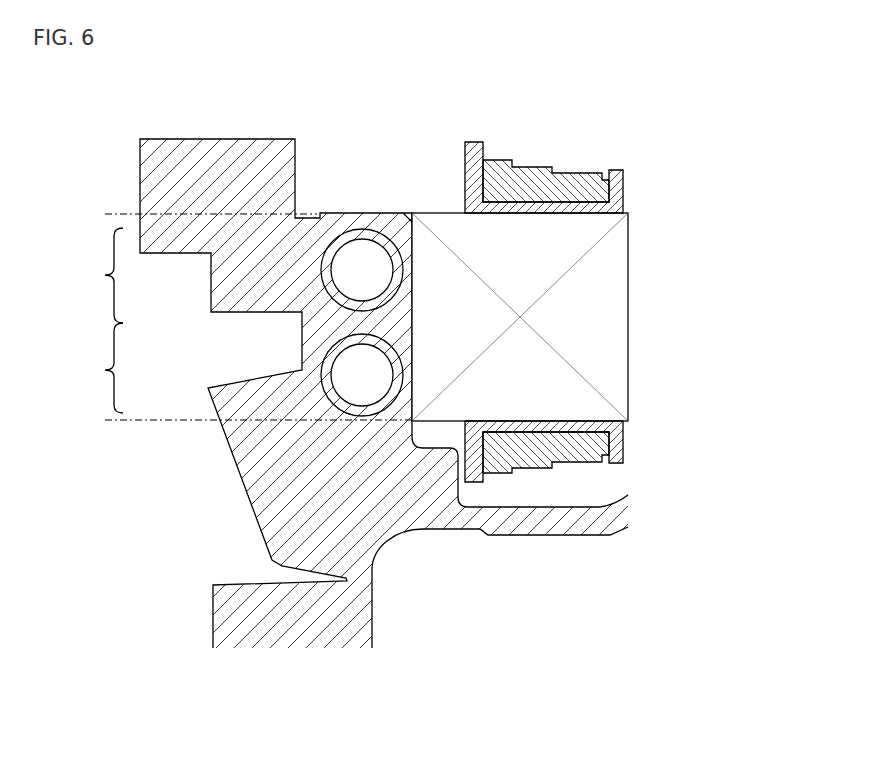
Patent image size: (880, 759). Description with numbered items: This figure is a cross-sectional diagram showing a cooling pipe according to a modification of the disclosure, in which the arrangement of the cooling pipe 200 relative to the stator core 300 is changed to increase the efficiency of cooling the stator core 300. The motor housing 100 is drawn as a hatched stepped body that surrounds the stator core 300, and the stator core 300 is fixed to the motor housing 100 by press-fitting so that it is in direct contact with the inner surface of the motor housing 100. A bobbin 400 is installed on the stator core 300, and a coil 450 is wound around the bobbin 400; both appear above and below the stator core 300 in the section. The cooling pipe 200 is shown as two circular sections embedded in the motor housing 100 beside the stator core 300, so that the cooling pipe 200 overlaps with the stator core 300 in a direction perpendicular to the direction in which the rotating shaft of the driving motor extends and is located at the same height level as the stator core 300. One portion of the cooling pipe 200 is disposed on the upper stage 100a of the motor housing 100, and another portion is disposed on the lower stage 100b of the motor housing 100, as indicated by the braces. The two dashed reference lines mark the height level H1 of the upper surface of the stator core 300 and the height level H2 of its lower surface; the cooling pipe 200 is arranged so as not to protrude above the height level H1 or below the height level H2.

The motor housing 100 is at (224, 155).
The upper stage 100a is at (82, 275).
The lower stage 100b is at (82, 368).
The cooling pipe 200 is at (372, 228).
The stator core 300 is at (616, 300).
The bobbin 400 is at (616, 195).
The coil 450 is at (525, 183).
The height level of upper surface of stator core H1 is at (193, 214).
The height level of lower surface of stator core H2 is at (241, 423).